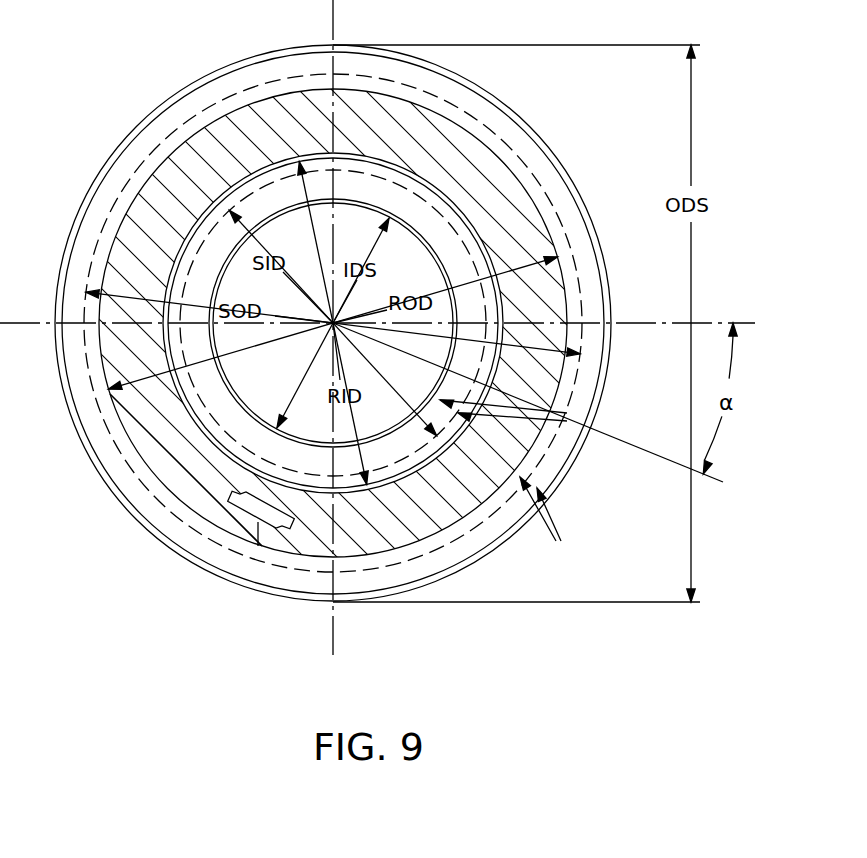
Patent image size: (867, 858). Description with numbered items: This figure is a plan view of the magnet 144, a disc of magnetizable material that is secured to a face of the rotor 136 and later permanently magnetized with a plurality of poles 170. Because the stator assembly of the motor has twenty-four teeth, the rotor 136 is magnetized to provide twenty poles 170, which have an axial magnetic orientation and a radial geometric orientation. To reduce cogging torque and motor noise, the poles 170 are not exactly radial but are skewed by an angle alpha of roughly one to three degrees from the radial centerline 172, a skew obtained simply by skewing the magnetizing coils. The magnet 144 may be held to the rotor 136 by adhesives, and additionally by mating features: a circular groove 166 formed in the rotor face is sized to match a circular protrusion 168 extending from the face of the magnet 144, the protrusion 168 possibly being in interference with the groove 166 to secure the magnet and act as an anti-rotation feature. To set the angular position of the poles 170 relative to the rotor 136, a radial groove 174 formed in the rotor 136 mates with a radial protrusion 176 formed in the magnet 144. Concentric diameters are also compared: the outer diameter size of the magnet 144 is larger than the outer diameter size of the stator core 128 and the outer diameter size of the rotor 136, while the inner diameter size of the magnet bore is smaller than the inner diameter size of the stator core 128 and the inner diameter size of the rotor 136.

The stator core 128 is at (548, 197).
The rotor 136 is at (167, 490).
The magnet 144 is at (207, 567).
The circular groove 166 is at (282, 528).
The circular protrusion 168 is at (258, 547).
The poles 170 is at (540, 127).
The radial centerline 172 is at (723, 482).
The radial groove 174 is at (555, 521).
The radial protrusion 176 is at (567, 414).